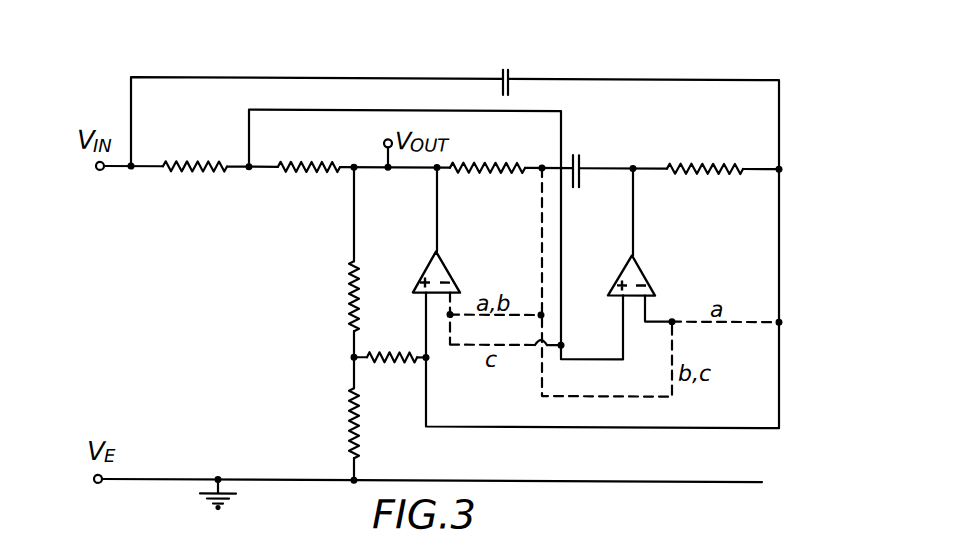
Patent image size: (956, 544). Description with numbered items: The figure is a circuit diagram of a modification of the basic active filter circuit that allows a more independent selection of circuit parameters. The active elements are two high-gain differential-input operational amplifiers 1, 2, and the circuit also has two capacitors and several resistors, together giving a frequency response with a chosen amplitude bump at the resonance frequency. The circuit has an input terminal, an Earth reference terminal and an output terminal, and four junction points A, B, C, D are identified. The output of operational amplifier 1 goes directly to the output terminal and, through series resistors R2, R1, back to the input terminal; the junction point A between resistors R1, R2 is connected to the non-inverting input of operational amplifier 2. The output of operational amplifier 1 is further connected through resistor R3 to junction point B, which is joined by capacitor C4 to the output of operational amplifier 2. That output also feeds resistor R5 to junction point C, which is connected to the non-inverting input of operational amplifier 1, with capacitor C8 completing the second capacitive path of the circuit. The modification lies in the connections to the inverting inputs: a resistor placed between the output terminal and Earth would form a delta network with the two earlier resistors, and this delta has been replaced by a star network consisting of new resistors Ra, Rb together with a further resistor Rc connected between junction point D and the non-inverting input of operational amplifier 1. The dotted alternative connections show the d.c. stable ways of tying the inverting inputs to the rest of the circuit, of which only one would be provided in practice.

The operational amplifier 1 is at (450, 268).
The operational amplifier 2 is at (645, 272).
The resistor R1 is at (195, 187).
The resistor R2 is at (309, 188).
The resistor R3 is at (487, 189).
The resistor R5 is at (705, 192).
The resistor Ra is at (335, 296).
The resistor Rb is at (335, 423).
The resistor Rc is at (392, 375).
The capacitor C4 is at (592, 162).
The capacitor C8 is at (522, 71).
The junction point A is at (244, 185).
The junction point B is at (540, 156).
The junction point C is at (789, 175).
The junction point D is at (343, 358).